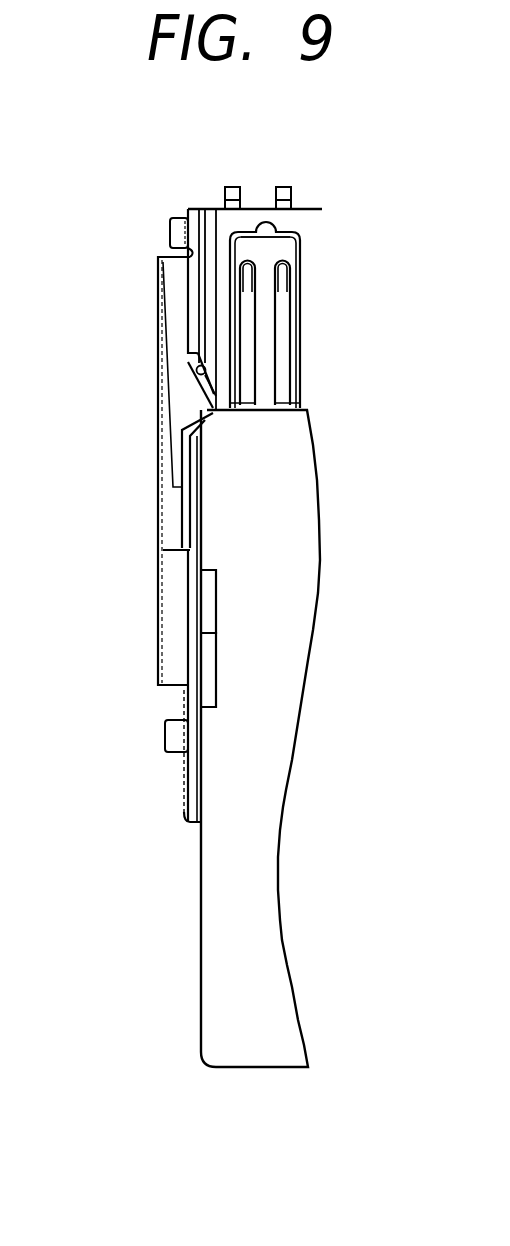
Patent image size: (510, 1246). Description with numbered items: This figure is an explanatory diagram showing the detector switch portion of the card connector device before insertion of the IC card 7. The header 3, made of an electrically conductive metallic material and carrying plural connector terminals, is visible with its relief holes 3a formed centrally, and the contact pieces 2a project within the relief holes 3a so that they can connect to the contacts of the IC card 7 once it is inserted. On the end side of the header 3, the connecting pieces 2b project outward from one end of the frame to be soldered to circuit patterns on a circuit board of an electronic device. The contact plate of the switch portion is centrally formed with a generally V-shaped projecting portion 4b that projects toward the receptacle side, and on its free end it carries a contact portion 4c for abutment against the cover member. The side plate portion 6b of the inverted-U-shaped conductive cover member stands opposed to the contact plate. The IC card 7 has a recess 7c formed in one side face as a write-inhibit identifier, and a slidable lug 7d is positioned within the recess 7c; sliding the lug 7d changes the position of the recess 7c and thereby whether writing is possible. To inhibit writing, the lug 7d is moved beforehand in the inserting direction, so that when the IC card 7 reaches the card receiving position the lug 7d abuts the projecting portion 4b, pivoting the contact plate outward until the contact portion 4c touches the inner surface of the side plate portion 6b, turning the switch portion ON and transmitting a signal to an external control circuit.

The IC card 7 is at (222, 982).
The header 3 is at (314, 208).
The relief holes 3a is at (277, 252).
The contact pieces 2a is at (283, 350).
The connecting pieces 2b is at (240, 186).
The projecting portion 4b is at (198, 370).
The contact portion 4c is at (187, 282).
The side plate portions 6b is at (158, 322).
The lug 7d is at (207, 592).
The recess 7c is at (197, 662).